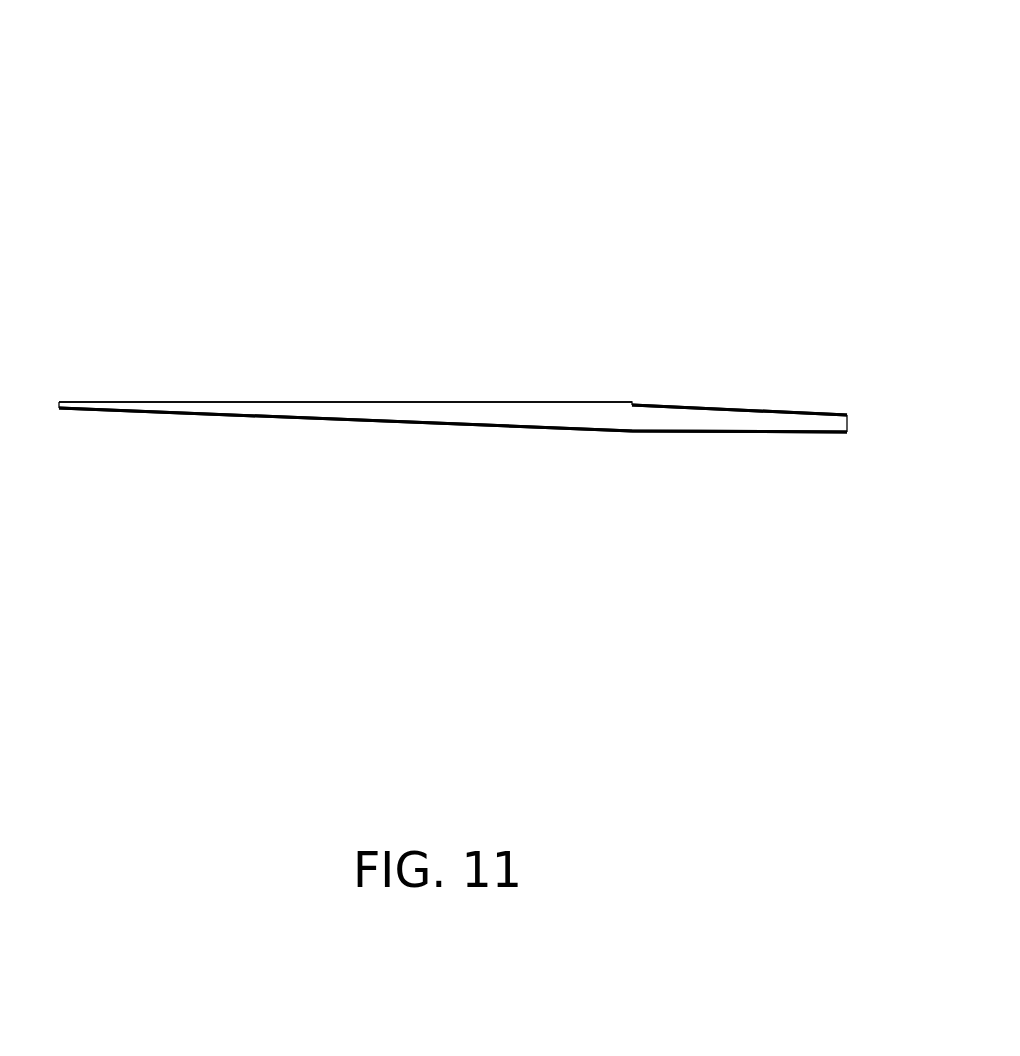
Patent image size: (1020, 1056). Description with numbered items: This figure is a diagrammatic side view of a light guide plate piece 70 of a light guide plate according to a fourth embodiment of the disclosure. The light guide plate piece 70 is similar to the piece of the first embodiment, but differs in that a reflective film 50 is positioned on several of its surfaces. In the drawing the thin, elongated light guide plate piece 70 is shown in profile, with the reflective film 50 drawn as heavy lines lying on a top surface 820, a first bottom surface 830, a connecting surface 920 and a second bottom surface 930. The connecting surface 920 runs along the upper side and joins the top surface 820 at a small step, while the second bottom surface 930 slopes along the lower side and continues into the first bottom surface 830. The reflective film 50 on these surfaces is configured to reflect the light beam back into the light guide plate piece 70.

The light guide plate piece 70 is at (395, 68).
The reflective film 50 is at (718, 408).
The connecting surface 920 is at (633, 402).
The top surface 820 is at (805, 410).
The first bottom surface 830 is at (700, 432).
The second bottom surface 930 is at (398, 423).